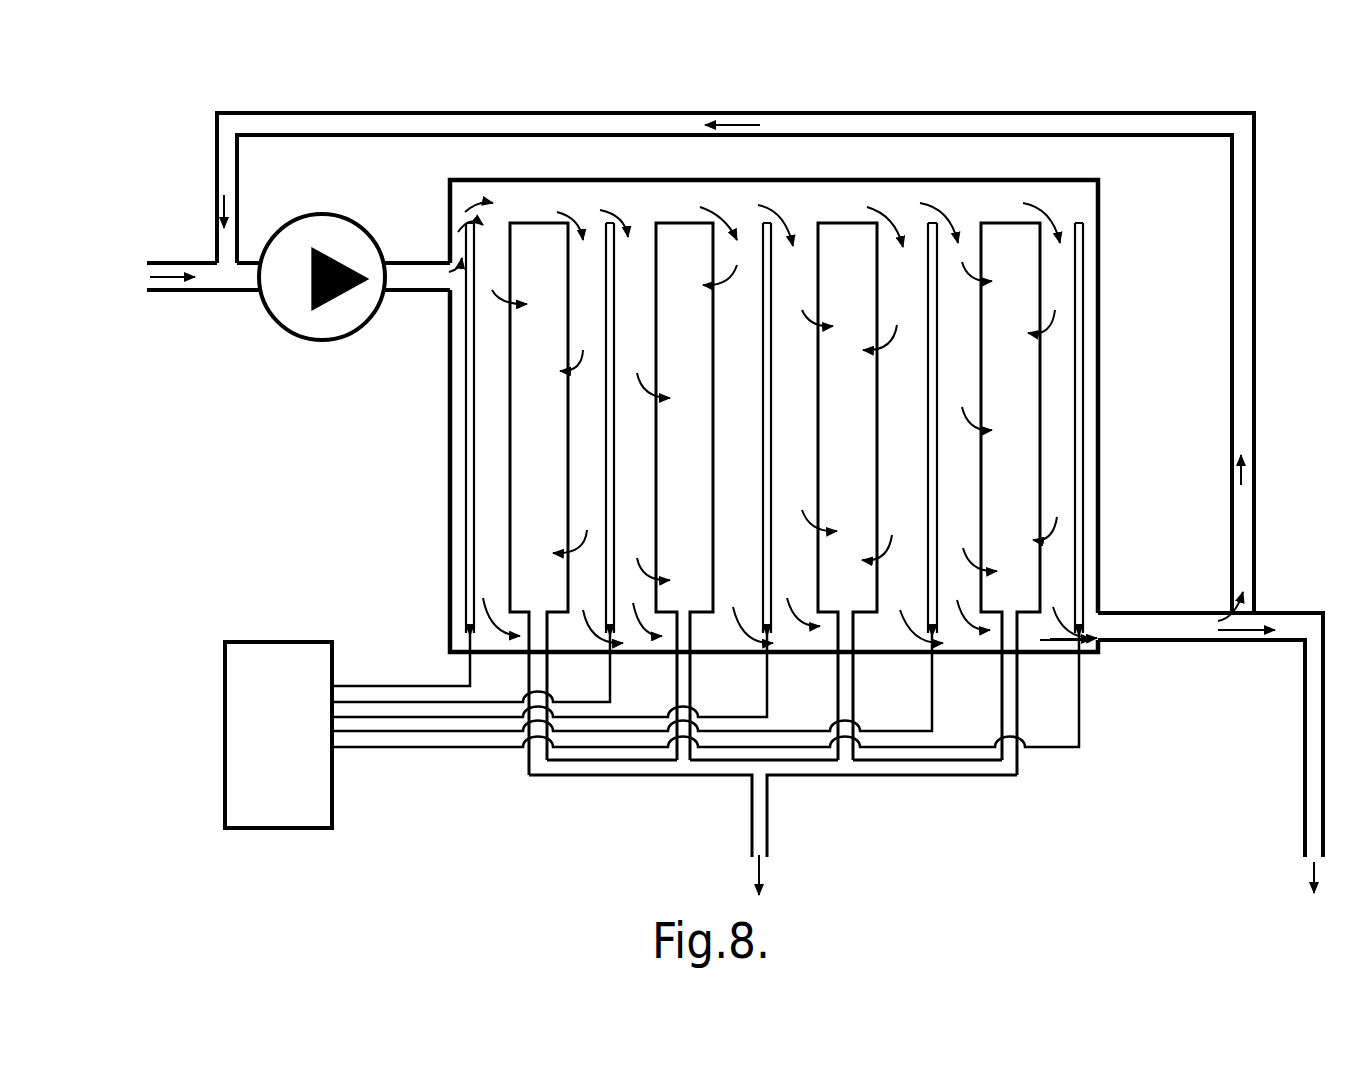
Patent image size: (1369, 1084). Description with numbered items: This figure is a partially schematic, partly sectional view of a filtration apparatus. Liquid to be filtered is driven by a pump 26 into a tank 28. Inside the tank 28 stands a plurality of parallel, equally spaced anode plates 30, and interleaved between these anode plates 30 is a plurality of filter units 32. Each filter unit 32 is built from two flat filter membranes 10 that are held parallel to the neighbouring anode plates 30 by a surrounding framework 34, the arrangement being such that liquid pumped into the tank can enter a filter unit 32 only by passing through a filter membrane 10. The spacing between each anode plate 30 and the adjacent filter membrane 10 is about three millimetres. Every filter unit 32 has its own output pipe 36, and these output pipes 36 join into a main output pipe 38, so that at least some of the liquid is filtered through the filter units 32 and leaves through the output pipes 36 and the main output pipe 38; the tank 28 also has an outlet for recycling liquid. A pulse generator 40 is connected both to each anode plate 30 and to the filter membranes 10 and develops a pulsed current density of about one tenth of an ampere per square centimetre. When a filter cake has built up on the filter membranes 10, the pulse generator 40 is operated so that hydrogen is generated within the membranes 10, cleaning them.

The filter membrane 10 is at (980, 392).
The pump 26 is at (291, 333).
The tank 28 is at (448, 557).
The anode plate 30 is at (606, 228).
The filter unit 32 is at (541, 223).
The surrounding framework 34 is at (560, 228).
The output pipe 36 is at (529, 686).
The main output pipe 38 is at (768, 826).
The pulse generator 40 is at (293, 642).